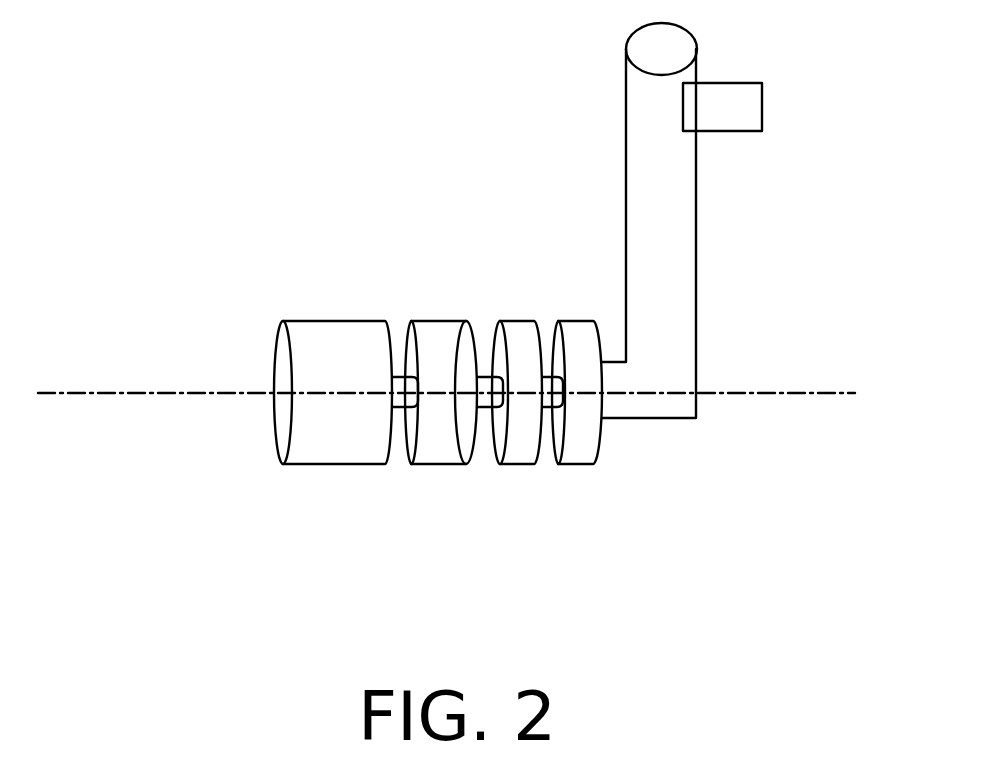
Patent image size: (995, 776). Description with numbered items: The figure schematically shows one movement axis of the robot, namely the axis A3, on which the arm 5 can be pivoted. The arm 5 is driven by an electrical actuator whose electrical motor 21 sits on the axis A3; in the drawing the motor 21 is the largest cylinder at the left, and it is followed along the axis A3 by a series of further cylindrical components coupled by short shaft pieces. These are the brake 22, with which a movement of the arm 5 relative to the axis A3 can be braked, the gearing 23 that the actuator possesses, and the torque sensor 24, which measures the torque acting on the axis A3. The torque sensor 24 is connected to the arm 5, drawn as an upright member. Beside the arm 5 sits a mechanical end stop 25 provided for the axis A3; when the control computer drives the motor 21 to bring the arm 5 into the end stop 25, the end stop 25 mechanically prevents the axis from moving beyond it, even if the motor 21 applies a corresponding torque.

The arm 5 is at (680, 227).
The electrical motor 21 is at (326, 440).
The brake 22 is at (432, 450).
The gearing 23 is at (516, 452).
The torque sensor 24 is at (580, 452).
The mechanical end stop 25 is at (748, 107).
The axis A3 is at (798, 393).